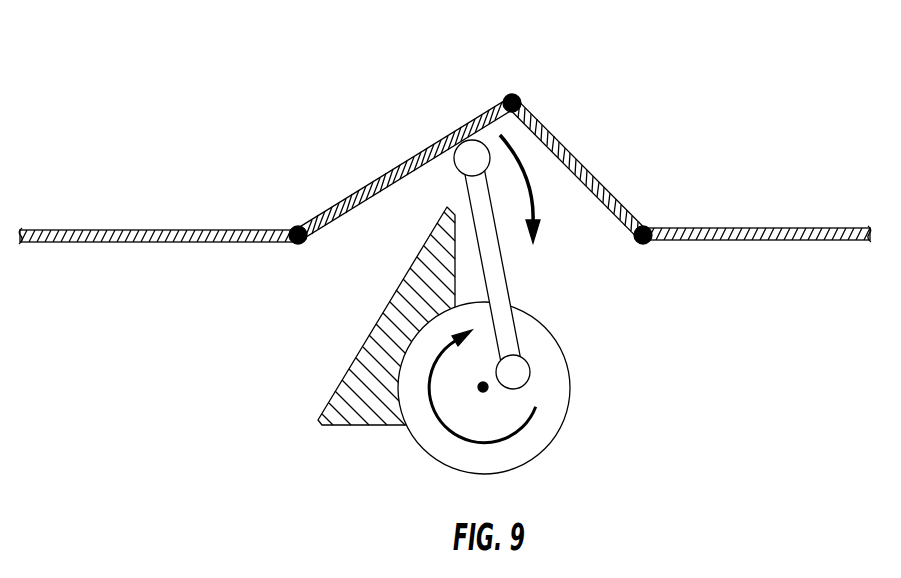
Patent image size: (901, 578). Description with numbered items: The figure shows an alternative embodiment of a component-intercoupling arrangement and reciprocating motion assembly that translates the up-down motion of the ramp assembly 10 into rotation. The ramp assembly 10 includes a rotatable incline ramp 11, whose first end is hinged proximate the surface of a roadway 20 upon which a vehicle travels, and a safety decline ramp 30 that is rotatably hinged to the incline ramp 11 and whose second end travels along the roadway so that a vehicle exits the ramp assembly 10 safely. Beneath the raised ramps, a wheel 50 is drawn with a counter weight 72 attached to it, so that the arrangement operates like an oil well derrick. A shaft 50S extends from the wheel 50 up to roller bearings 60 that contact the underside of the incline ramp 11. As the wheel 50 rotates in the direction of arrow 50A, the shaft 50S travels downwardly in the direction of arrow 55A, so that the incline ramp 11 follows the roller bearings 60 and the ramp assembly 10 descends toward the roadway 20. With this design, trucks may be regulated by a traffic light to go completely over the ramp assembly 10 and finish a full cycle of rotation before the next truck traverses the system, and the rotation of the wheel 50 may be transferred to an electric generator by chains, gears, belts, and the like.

The ramp assembly 10 is at (572, 97).
The rotatable incline ramp 11 is at (408, 158).
The roadway 20 is at (193, 230).
The safety decline ramp 30 is at (595, 167).
The wheel 50 is at (563, 355).
The arrow indicating wheel rotation direction 50A is at (517, 432).
The shaft 50S is at (505, 275).
The arrow indicating shaft travel direction 55A is at (527, 168).
The roller bearings 60 is at (455, 163).
The counter weight 72 is at (367, 323).